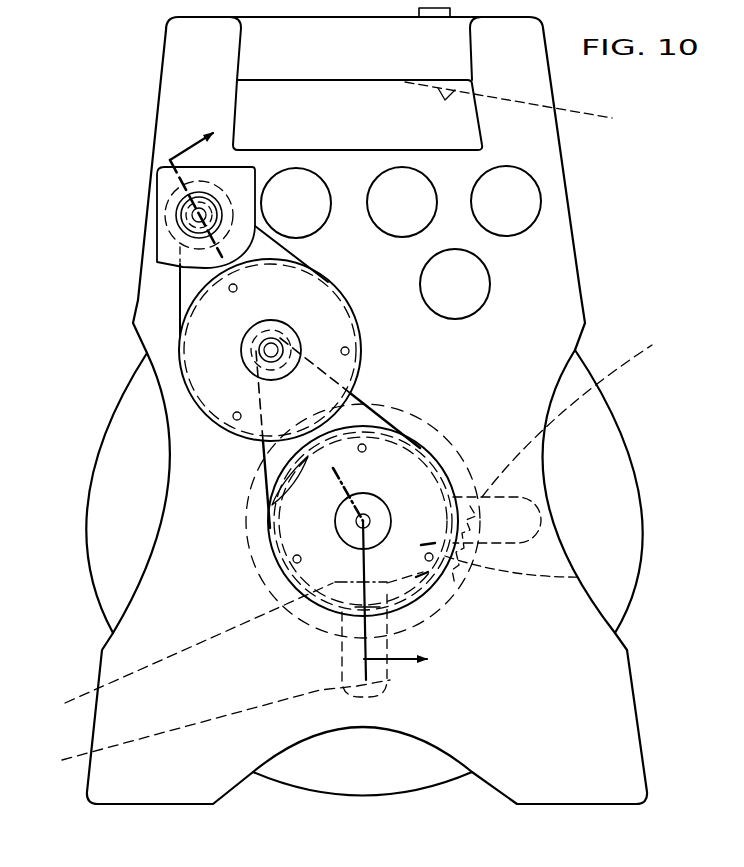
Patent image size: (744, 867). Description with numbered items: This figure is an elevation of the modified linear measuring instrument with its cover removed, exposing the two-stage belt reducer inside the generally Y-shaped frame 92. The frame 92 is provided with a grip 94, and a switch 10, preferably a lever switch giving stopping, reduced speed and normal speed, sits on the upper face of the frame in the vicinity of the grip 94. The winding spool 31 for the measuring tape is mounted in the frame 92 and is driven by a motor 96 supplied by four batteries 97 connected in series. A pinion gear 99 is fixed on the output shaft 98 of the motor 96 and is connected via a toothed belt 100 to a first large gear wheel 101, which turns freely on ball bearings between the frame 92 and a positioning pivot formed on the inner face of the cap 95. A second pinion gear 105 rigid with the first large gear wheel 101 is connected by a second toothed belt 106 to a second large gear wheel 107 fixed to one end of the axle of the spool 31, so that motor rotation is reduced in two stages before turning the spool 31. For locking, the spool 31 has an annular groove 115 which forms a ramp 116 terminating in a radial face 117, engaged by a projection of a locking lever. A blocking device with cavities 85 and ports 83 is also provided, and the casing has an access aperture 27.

The switch 10 is at (430, 12).
The access aperture 27 is at (206, 726).
The winding spool 31 is at (624, 442).
The ports 83 is at (539, 522).
The cavities 85 is at (587, 409).
The frame 92 is at (565, 148).
The grip 94 is at (263, 50).
The cap 95 is at (10, 257).
The motor 96 is at (165, 183).
The batteries 97 is at (385, 193).
The output shaft 98 is at (186, 230).
The pinion gear 99 is at (177, 212).
The toothed belt 100 is at (178, 293).
The first large gear wheel 101 is at (207, 418).
The second pinion gear 105 is at (245, 336).
The second toothed belt 106 is at (263, 477).
The second large gear wheel 107 is at (307, 490).
The annular groove 115 is at (420, 602).
The ramp 116 is at (580, 577).
The radial face 117 is at (224, 643).